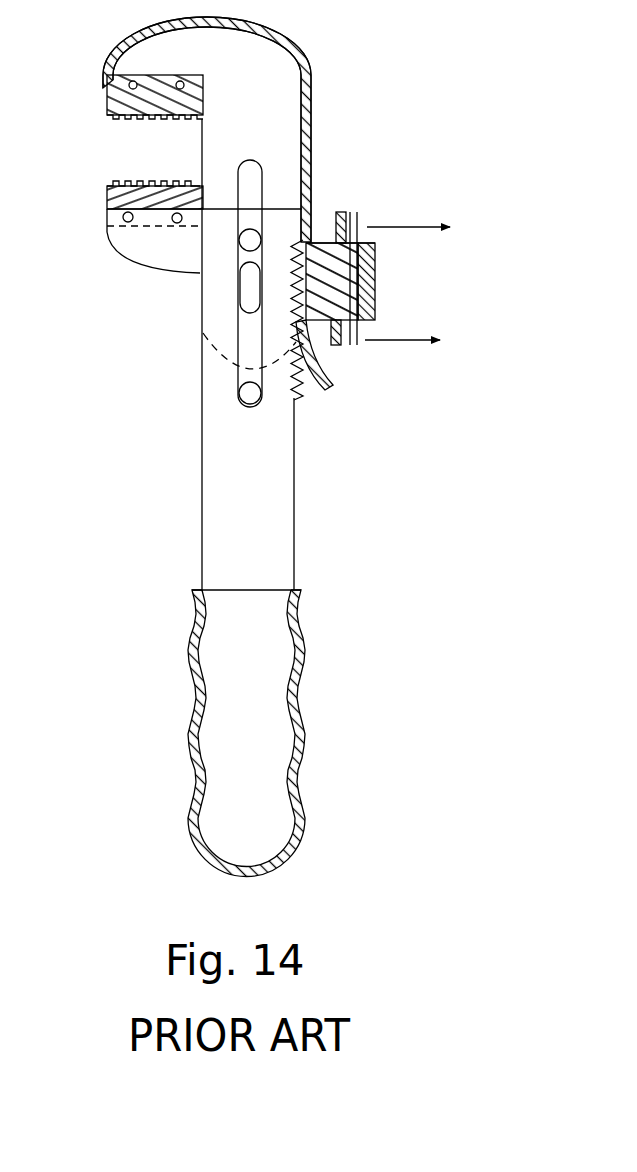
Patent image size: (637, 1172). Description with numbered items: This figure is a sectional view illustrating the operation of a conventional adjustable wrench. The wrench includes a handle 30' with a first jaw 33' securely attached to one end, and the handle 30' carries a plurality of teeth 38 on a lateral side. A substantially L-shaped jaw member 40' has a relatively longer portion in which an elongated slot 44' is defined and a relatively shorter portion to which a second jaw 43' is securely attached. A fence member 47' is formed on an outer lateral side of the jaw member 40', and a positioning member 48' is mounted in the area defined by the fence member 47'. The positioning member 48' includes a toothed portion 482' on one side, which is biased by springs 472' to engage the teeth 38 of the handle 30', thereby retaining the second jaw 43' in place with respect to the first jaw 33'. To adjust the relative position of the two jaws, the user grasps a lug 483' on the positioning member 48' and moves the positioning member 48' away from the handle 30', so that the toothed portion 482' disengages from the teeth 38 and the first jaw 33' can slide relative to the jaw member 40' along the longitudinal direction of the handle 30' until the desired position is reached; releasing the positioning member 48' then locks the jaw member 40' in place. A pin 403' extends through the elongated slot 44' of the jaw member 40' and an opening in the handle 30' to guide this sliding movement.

The handle 30' is at (286, 498).
The first jaw 33' is at (177, 218).
The teeth 38 is at (310, 323).
The jaw member 40' is at (241, 129).
The second jaw 43' is at (128, 105).
The elongated slot 44' is at (213, 283).
The fence member 47' is at (374, 281).
The positioning member 48' is at (340, 253).
The pin 403' is at (183, 278).
The springs 472' is at (434, 220).
The toothed portion 482' is at (401, 246).
The lug 483' is at (403, 352).